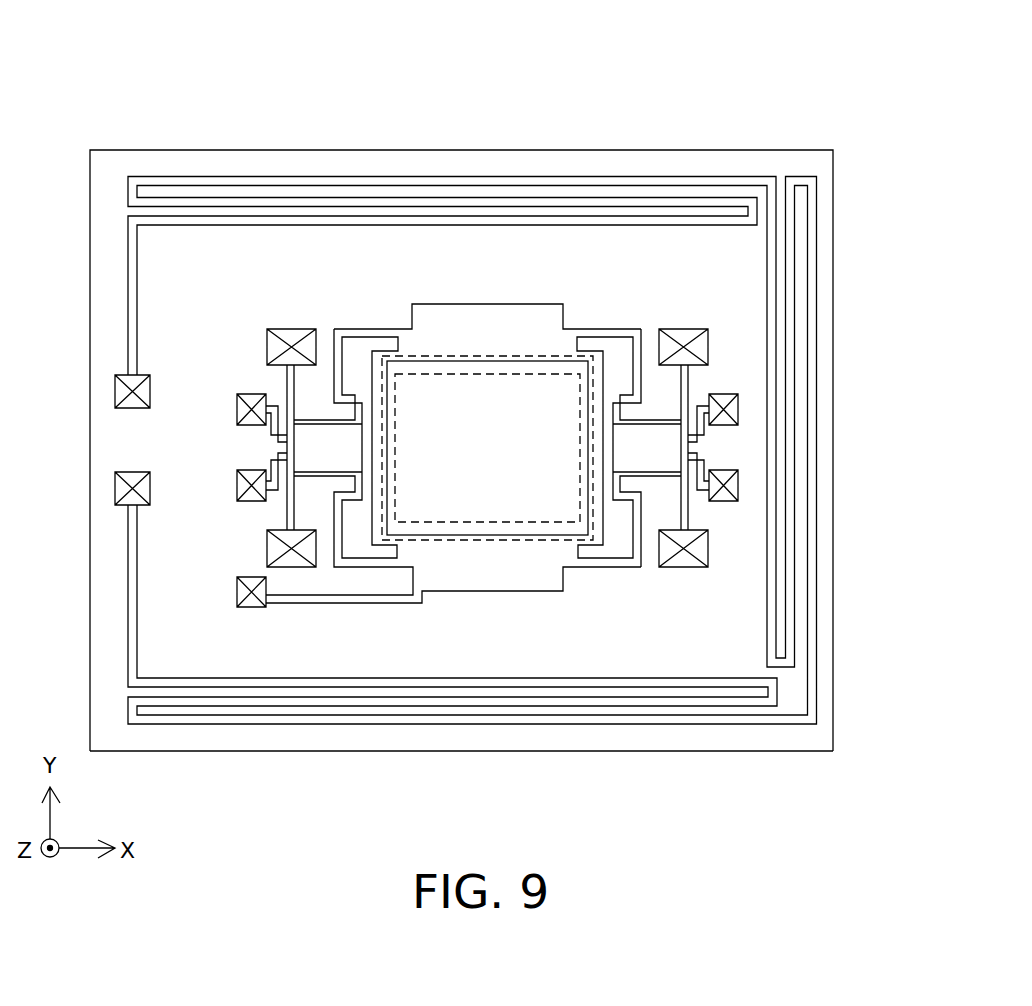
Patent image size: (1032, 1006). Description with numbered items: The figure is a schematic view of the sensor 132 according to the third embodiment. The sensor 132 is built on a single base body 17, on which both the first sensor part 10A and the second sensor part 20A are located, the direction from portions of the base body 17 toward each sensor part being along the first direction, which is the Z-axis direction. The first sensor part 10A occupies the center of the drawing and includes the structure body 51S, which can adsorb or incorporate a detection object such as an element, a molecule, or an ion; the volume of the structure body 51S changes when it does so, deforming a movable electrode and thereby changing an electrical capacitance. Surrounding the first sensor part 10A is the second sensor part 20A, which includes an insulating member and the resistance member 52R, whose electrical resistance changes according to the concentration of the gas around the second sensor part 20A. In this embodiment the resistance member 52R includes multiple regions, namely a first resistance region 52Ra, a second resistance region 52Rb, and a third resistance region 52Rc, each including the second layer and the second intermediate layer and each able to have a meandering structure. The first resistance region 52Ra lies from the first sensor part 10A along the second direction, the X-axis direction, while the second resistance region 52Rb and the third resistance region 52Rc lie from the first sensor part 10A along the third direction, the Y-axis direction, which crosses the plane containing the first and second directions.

The sensor 132 is at (848, 158).
The second sensor part 20A is at (818, 312).
The base body 17 is at (781, 738).
The resistance member 52R is at (811, 702).
The third resistance region 52Rc is at (472, 178).
The first resistance region 52Ra is at (815, 454).
The second resistance region 52Rb is at (442, 720).
The first sensor part 10A is at (605, 322).
The structure body 51S is at (518, 350).